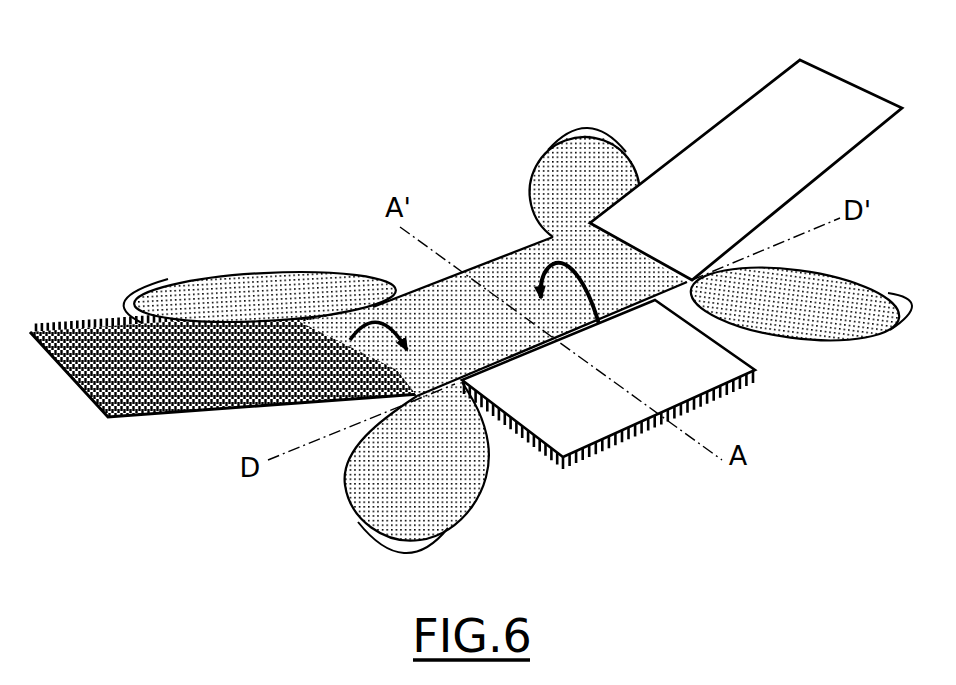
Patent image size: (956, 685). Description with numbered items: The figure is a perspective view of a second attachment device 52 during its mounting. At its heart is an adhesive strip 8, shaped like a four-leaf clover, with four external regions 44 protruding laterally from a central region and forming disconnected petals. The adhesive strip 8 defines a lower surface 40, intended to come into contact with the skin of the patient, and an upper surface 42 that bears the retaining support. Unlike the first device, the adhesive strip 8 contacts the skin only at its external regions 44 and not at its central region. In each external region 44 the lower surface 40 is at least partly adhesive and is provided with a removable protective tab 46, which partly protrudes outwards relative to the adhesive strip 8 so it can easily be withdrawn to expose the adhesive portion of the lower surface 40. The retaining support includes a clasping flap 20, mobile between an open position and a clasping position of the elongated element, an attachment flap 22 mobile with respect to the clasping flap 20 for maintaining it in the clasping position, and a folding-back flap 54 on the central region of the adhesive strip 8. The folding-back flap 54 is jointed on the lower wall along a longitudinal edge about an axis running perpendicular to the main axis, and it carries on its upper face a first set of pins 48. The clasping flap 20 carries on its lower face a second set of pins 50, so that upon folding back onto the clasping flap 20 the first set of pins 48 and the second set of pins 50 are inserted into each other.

The adhesive strip 8 is at (537, 337).
The clasping flap 20 is at (225, 354).
The attachment flap 22 is at (830, 108).
The lower surface 40 is at (396, 291).
The upper surface 42 is at (505, 280).
The external region 44 is at (238, 286).
The removable protective tab 46 is at (134, 281).
The first set of pins 48 is at (637, 434).
The second set of pins 50 is at (88, 316).
The second attachment device 52 is at (537, 337).
The folding-back flap 54 is at (707, 362).